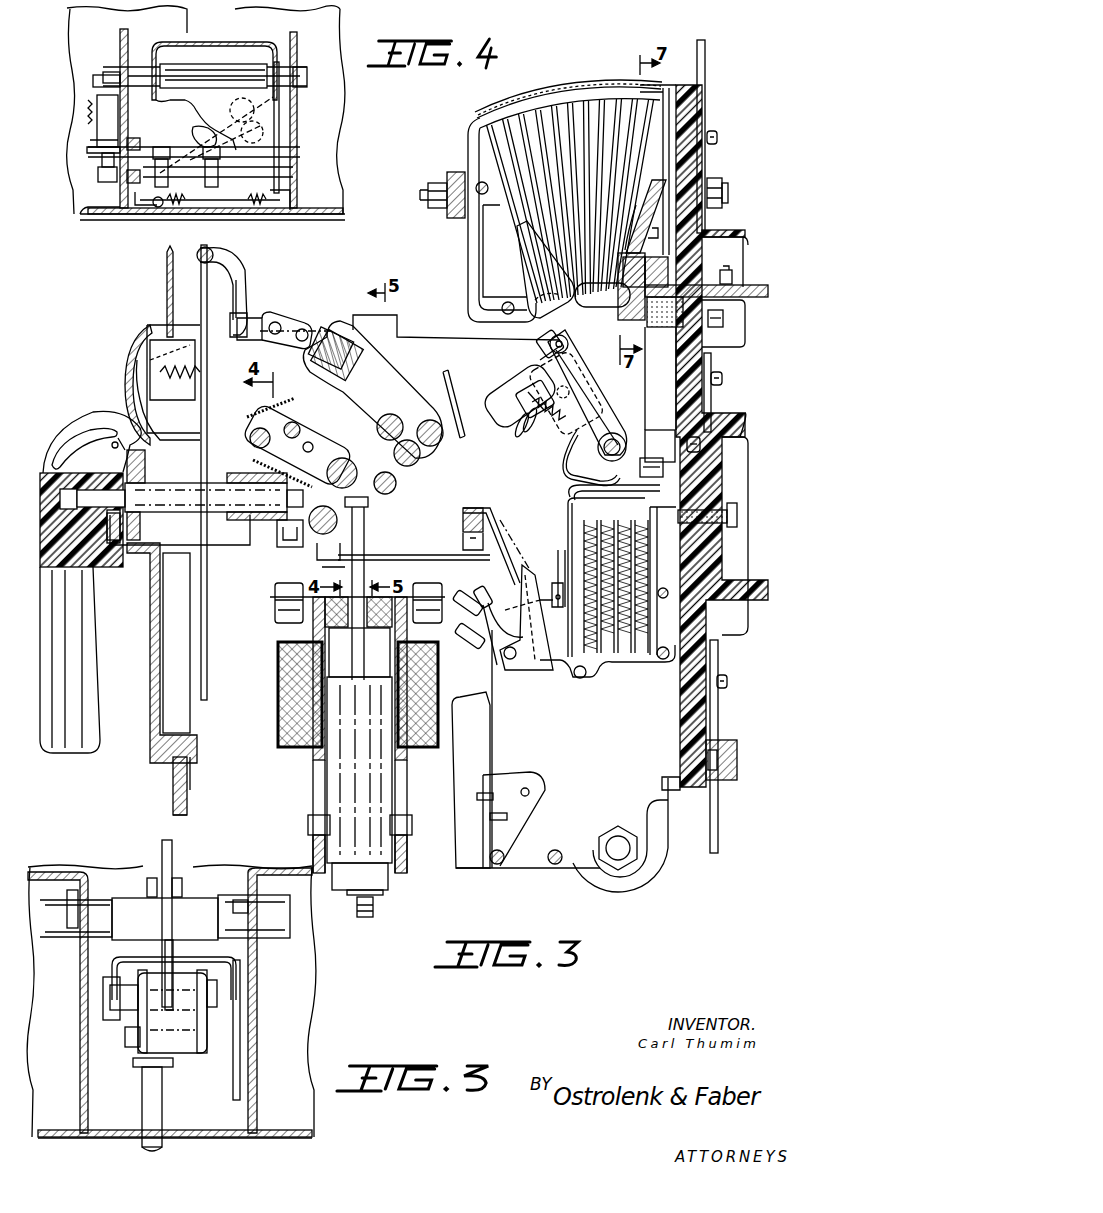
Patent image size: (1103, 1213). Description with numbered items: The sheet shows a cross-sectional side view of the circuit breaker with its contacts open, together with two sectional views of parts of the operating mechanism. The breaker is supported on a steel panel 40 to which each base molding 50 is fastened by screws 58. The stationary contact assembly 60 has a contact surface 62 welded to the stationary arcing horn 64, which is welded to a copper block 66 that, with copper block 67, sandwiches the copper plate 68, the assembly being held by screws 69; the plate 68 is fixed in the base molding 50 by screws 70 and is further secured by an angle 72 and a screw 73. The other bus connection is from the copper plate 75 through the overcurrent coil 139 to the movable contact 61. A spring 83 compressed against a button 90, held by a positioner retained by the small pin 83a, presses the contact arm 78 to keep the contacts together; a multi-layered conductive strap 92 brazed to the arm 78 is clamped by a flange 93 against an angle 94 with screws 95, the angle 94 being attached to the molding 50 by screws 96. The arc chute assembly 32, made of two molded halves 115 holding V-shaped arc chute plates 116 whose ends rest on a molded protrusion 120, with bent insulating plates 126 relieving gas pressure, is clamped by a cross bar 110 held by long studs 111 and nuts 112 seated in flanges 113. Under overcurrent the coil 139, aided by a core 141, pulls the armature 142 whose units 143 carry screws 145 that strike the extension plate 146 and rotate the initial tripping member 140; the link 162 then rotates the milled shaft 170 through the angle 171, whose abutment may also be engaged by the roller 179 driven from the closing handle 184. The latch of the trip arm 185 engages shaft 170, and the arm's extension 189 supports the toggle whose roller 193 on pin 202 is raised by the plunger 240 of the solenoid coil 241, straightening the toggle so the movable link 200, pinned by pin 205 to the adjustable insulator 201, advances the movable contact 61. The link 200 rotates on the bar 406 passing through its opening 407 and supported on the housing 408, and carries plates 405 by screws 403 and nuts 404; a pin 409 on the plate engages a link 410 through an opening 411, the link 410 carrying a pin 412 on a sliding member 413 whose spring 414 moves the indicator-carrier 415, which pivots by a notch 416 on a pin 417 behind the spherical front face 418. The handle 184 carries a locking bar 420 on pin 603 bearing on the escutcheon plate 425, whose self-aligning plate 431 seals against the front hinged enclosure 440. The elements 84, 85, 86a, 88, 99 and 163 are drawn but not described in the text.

In FIG. 3, the arc chute assembly 32 is at (467, 238).
In FIG. 3, the steel panel 40 is at (705, 58).
In FIG. 3, the base molding 50 is at (692, 84).
In FIG. 3, the screws 58 is at (718, 136).
In FIG. 3, the stationary contact assembly 60 is at (636, 220).
In FIG. 3, the movable contact 61 is at (575, 340).
In FIG. 3, the contact surface 62 is at (630, 300).
In FIG. 3, the stationary arcing horn 64 is at (652, 190).
In FIG. 3, the copper block 66 is at (725, 262).
In FIG. 3, the copper block 67 is at (668, 328).
In FIG. 3, the copper plate 68 is at (760, 285).
In FIG. 3, the screws 69 is at (659, 233).
In FIG. 3, the screws 70 is at (745, 333).
In FIG. 3, the angle 72 is at (745, 308).
In FIG. 3, the screw 73 is at (732, 270).
In FIG. 3, the copper plate 75 is at (758, 583).
In FIG. 3, the contact arm 78 is at (521, 250).
In FIG. 3, the spring 83 is at (542, 440).
In FIG. 3, the small pin 83a is at (566, 393).
In FIG. 3, the lever 84 is at (608, 412).
In FIG. 3, the pivot 85 is at (550, 345).
In FIG. 3, the spring 86a is at (535, 406).
In FIG. 3, the pivot pin 88 is at (612, 445).
In FIG. 3, the button 90 is at (522, 435).
In FIG. 3, the multi-layered conductive strap 92 is at (562, 482).
In FIG. 3, the flange 93 is at (576, 493).
In FIG. 3, the angle 94 is at (656, 430).
In FIG. 3, the screws 95 is at (648, 458).
In FIG. 3, the screws 96 is at (702, 443).
In FIG. 3, the dashpot 99 is at (500, 380).
In FIG. 3, the cross bar 110 is at (458, 172).
In FIG. 3, the long studs 111 is at (428, 194).
In FIG. 3, the nuts 112 is at (728, 192).
In FIG. 3, the flanges 113 is at (716, 180).
In FIG. 3, the molded halves 115 is at (468, 280).
In FIG. 3, the arc chute plates 116 is at (498, 130).
In FIG. 3, the molded protrusion 120 is at (604, 296).
In FIG. 3, the arc chute insulating plates 126 is at (558, 108).
In FIG. 3, the overcurrent coil 139 is at (625, 650).
In FIG. 3, the initial tripping member 140 is at (462, 520).
In FIG. 3, the core 141 is at (558, 585).
In FIG. 3, the armature 142 is at (526, 617).
In FIG. 3, the units 143 is at (498, 625).
In FIG. 3, the screw 145 is at (453, 605).
In FIG. 3, the extension plate 146 is at (497, 520).
In FIG. 3, the link 162 is at (408, 547).
In FIG. 3, the bracket 163 is at (462, 545).
In FIG. 3, the milled shaft 170 is at (340, 522).
In FIG. 3, the angle 171 is at (318, 550).
In FIG. 3, the roller 179 is at (275, 533).
In FIG. 3, the closing handle 184 is at (95, 678).
In FIG. 4, the trip arm 185 is at (279, 113).
In FIG. 5, the trip arm 185 is at (234, 1070).
In FIG. 4, the extension 189 is at (168, 43).
In FIG. 5, the extension 189 is at (120, 958).
In FIG. 5, the roller 193 is at (175, 1053).
In FIG. 3, the roller 193 is at (296, 428).
In FIG. 5, the movable link 200 is at (175, 950).
In FIG. 3, the movable link 200 is at (390, 380).
In FIG. 3, the adjustable insulator 201 is at (451, 396).
In FIG. 5, the pin 202 is at (125, 1040).
In FIG. 3, the pin 205 is at (442, 445).
In FIG. 5, the plunger 240 is at (163, 1098).
In FIG. 3, the plunger 240 is at (370, 505).
In FIG. 3, the solenoid coil 241 is at (440, 690).
In FIG. 3, the screws 403 is at (287, 337).
In FIG. 3, the nuts 404 is at (285, 318).
In FIG. 3, the plates 405 is at (255, 313).
In FIG. 5, the bar 406 is at (220, 898).
In FIG. 3, the bar 406 is at (335, 330).
In FIG. 5, the opening 407 is at (235, 915).
In FIG. 3, the opening 407 is at (345, 370).
In FIG. 5, the housing 408 is at (248, 898).
In FIG. 3, the housing 408 is at (403, 338).
In FIG. 3, the pin 409 is at (240, 336).
In FIG. 5, the link 410 is at (172, 855).
In FIG. 3, the link 410 is at (248, 270).
In FIG. 3, the opening 411 is at (247, 300).
In FIG. 3, the pin 412 is at (212, 250).
In FIG. 3, the sliding member 413 is at (186, 291).
In FIG. 3, the spring 414 is at (173, 379).
In FIG. 3, the indicator-carrier 415 is at (135, 367).
In FIG. 3, the notch 416 is at (138, 387).
In FIG. 3, the pin 417 is at (143, 340).
In FIG. 3, the front face 418 is at (150, 327).
In FIG. 3, the locking bar 420 is at (62, 422).
In FIG. 3, the escutcheon plate 425 is at (152, 580).
In FIG. 3, the self-aligning plate 431 is at (190, 800).
In FIG. 3, the front hinged enclosure 440 is at (176, 810).
In FIG. 3, the pin 603 is at (115, 440).